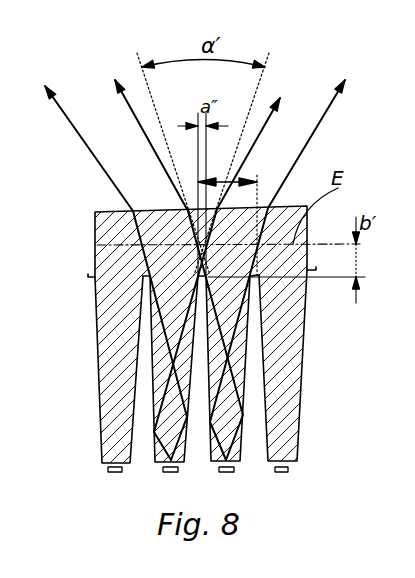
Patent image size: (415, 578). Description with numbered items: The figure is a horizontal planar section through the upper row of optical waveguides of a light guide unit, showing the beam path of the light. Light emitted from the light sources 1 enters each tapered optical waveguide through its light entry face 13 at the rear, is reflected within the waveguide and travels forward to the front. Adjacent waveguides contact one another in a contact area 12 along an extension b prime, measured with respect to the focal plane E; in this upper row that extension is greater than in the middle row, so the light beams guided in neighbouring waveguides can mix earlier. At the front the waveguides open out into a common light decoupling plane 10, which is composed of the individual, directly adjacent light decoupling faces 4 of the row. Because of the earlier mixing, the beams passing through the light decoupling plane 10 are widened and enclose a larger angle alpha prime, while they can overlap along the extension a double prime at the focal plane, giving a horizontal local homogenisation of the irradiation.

The light source 1 is at (115, 472).
The light decoupling face 4 is at (218, 182).
The light decoupling plane 10 is at (96, 211).
The contact area 12 is at (143, 270).
The light entry face 13 is at (111, 457).